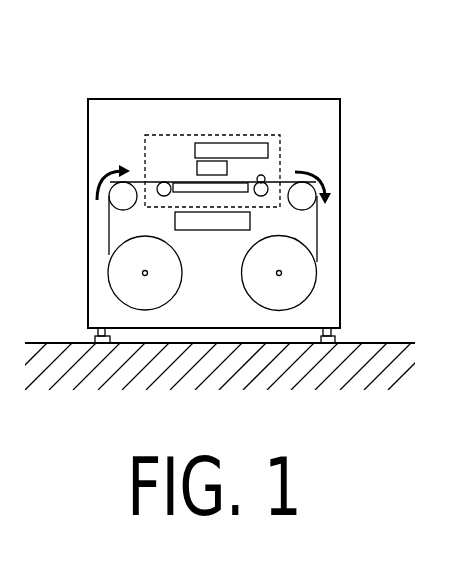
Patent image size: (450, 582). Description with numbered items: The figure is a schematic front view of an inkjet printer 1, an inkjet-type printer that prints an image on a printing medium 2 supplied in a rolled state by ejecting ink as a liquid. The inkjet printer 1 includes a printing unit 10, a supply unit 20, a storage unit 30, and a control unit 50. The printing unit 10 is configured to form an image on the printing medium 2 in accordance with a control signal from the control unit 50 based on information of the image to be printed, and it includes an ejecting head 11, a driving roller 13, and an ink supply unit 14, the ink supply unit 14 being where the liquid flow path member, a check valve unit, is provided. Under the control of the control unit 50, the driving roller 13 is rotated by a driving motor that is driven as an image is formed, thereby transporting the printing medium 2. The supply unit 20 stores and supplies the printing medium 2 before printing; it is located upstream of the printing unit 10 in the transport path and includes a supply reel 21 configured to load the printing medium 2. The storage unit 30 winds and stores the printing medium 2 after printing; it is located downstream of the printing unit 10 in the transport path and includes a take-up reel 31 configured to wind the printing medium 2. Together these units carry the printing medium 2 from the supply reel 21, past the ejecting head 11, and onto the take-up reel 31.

The inkjet printer 1 is at (340, 62).
The printing medium 2 is at (107, 233).
The printing unit 10 is at (177, 134).
The ejecting head 11 is at (200, 168).
The driving roller 13 is at (264, 180).
The ink supply unit 14 is at (238, 150).
The supply unit 20 is at (127, 278).
The supply reel 21 is at (182, 282).
The storage unit 30 is at (296, 273).
The take-up reel 31 is at (245, 250).
The control unit 50 is at (250, 219).